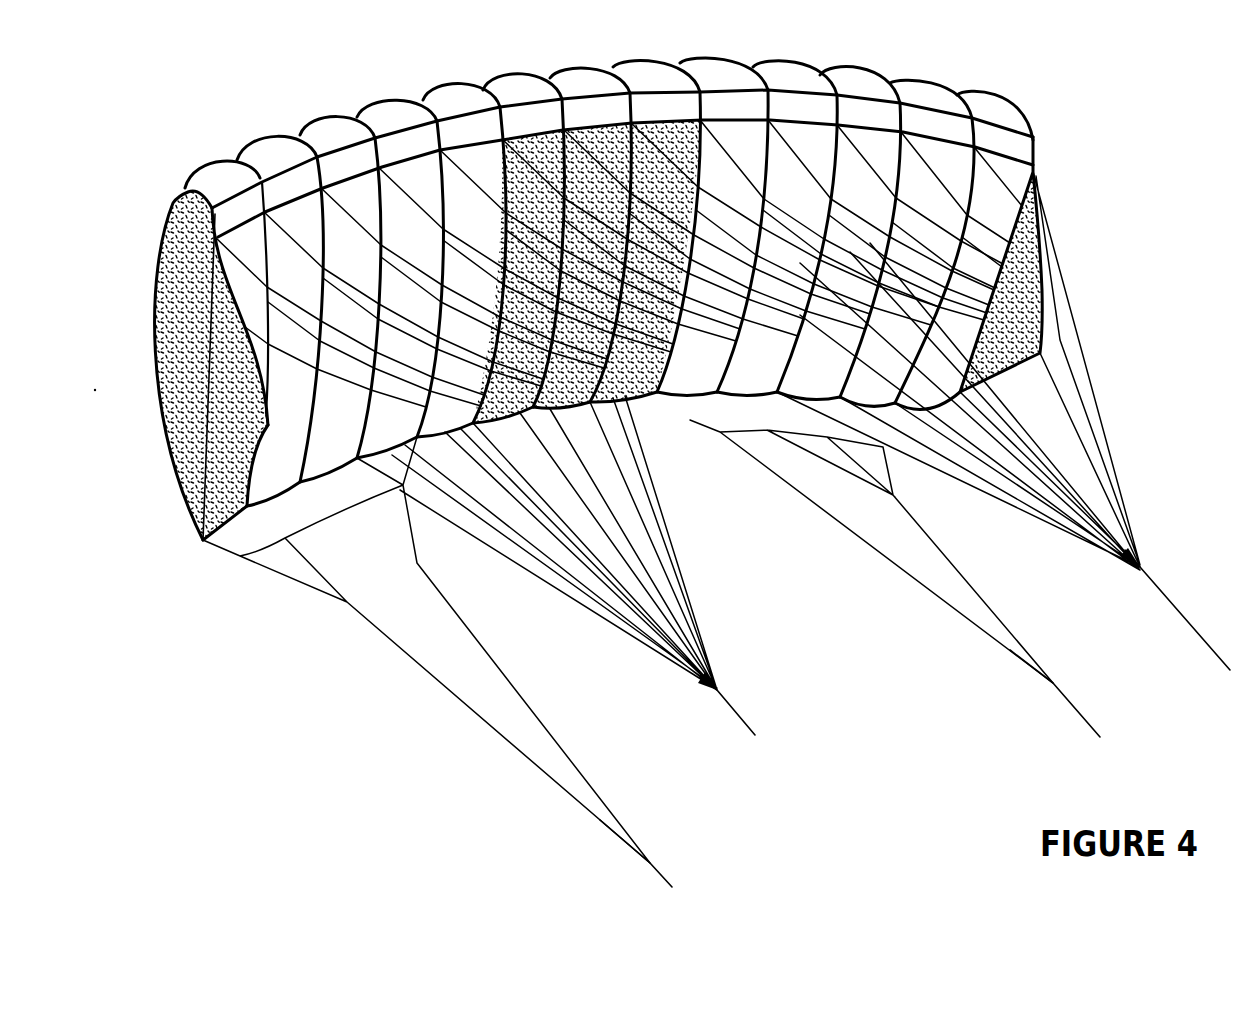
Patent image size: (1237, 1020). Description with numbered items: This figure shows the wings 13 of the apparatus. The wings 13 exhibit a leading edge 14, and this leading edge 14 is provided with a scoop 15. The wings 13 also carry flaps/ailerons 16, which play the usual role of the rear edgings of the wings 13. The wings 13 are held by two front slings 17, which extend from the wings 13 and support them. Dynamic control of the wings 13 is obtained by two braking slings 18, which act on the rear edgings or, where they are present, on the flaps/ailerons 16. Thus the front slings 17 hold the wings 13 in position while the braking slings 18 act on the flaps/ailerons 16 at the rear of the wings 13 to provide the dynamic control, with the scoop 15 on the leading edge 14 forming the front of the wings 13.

The wings 13 is at (384, 89).
The leading edge 14 is at (887, 83).
The scoop 15 is at (1006, 147).
The flaps/ailerons 16 is at (405, 488).
The front slings 17 is at (718, 690).
The braking slings 18 is at (635, 825).